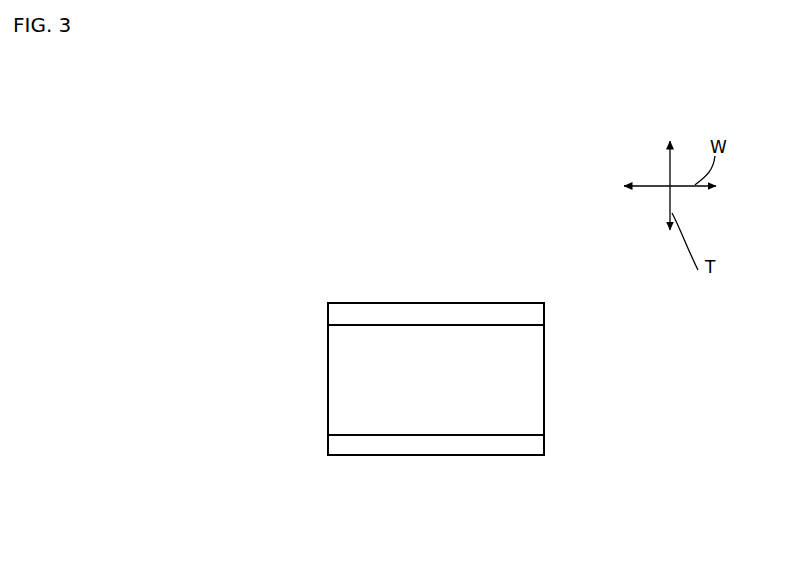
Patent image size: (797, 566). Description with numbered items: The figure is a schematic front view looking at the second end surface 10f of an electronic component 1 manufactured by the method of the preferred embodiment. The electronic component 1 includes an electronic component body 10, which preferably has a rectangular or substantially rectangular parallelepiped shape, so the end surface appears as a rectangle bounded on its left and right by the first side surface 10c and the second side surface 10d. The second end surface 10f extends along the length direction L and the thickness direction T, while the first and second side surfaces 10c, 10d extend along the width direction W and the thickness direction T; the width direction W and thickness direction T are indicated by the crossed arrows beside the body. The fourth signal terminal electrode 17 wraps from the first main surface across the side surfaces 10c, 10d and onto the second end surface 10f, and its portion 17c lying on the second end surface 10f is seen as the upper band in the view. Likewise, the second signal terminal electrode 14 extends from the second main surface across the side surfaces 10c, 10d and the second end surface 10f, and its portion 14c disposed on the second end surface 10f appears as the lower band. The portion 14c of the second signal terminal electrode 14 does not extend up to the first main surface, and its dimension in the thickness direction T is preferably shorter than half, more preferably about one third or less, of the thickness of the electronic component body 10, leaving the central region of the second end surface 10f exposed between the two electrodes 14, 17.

The electronic component 1 is at (498, 283).
The electronic component body 10 is at (547, 369).
The first side surface 10c is at (327, 407).
The second side surface 10d is at (545, 410).
The second end surface 10f is at (345, 348).
The second signal terminal electrode 14 is at (507, 457).
The portion of second signal terminal electrode disposed on second end surface 14c is at (472, 450).
The fourth signal terminal electrode 17 is at (370, 302).
The portion of fourth signal terminal electrode disposed on second end surface 17c is at (450, 310).